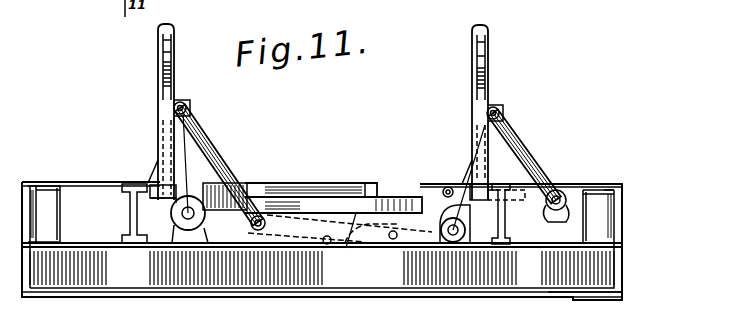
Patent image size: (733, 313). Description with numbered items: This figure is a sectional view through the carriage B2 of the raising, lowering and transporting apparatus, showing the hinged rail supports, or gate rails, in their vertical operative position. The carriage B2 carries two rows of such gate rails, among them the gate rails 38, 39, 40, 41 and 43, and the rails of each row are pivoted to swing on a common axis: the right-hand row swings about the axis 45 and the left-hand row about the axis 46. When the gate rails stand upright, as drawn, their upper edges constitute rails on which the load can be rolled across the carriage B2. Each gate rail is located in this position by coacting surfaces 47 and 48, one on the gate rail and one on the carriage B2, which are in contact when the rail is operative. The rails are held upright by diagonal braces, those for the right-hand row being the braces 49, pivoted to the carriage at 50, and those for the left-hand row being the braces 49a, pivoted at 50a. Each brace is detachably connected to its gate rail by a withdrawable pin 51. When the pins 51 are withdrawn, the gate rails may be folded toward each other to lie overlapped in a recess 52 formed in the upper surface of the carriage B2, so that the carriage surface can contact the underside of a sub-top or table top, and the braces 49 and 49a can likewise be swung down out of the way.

The gate rail 38 is at (176, 26).
The gate rail 39 is at (266, 311).
The gate rail 40 is at (446, 312).
The gate rail 41 is at (585, 302).
The gate rail 43 is at (379, 212).
The axis of right-hand row of gate rails 45 is at (472, 245).
The axis of left-hand row of gate rails 46 is at (186, 215).
The coacting surface 47 is at (165, 185).
The coacting surface 48 is at (168, 201).
The diagonal brace 49 is at (535, 148).
The diagonal brace 49a is at (218, 160).
The brace pivot 50 is at (568, 193).
The brace pivot 50a is at (259, 216).
The withdrawable pin 51 is at (190, 108).
The recess 52 is at (408, 218).
The carriage B2 is at (623, 249).